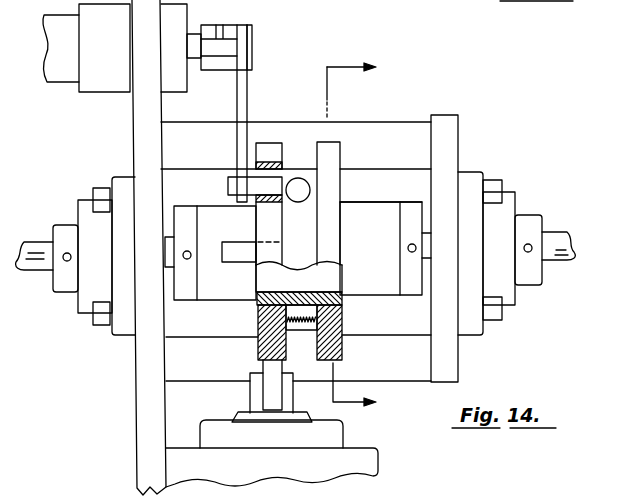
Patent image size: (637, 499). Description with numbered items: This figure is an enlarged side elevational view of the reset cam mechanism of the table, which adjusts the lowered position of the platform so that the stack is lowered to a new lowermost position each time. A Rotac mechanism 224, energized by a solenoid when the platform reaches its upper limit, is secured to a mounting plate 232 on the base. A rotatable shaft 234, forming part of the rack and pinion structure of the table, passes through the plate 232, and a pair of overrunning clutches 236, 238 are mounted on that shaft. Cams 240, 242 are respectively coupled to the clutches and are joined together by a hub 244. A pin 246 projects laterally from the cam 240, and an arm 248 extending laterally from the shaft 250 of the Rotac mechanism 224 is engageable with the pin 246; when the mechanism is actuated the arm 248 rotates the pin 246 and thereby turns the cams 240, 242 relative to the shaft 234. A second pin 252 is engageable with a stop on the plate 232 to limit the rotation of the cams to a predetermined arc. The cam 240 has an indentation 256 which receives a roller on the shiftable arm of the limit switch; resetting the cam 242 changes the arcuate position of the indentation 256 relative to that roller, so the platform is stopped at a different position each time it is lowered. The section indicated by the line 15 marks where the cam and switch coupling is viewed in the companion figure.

The section line 15- 15 is at (367, 241).
The Rotac mechanism 224 is at (115, 62).
The mounting plate 232 is at (121, 247).
The rotatable shaft 234 is at (530, 253).
The clutch 236 is at (228, 191).
The clutch 238 is at (385, 186).
The cam 240 is at (215, 253).
The cam 242 is at (385, 248).
The hub 244 is at (324, 281).
The pin 246 is at (236, 157).
The arm 248 is at (267, 113).
The shaft 250 is at (234, 35).
The pin 252 is at (210, 267).
The indentation 256 is at (295, 453).